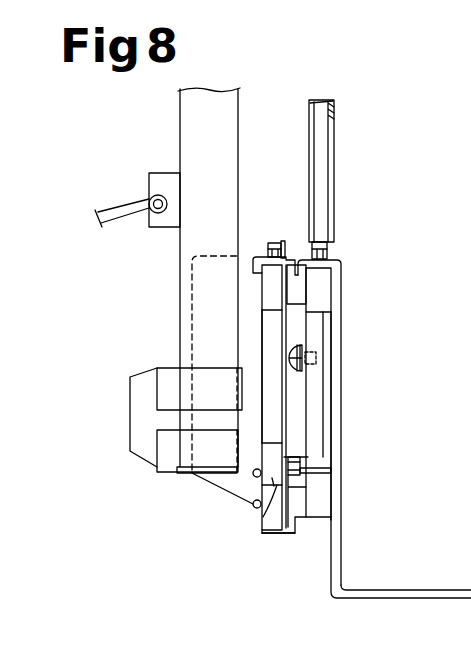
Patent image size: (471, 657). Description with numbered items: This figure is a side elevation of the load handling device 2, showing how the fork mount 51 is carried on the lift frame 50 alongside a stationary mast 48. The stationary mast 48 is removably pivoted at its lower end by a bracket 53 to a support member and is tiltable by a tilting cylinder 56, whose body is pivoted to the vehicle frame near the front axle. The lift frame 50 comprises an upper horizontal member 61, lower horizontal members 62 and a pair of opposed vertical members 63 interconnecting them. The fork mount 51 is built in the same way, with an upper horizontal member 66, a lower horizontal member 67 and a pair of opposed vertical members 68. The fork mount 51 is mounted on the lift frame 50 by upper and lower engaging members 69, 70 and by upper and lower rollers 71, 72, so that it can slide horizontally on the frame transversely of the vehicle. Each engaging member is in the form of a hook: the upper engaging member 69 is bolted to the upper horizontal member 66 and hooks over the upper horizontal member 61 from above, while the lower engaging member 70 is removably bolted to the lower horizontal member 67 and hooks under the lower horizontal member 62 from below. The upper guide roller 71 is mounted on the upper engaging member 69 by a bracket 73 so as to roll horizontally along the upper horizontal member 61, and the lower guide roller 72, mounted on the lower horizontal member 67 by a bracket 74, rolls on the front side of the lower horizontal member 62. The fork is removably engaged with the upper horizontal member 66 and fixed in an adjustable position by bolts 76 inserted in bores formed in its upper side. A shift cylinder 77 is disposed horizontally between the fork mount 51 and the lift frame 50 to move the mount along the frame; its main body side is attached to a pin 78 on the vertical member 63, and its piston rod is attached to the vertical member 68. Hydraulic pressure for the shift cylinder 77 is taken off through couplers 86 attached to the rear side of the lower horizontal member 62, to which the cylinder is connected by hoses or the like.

The load handling device 2 is at (353, 293).
The stationary mast 48 is at (198, 126).
The lift frame 50 is at (258, 337).
The fork mount 51 is at (329, 388).
The bracket 53 is at (146, 423).
The tilting cylinder 56 is at (121, 208).
The upper horizontal member 61 is at (270, 287).
The lower horizontal member 62 is at (266, 524).
The vertical member 63 is at (238, 432).
The upper horizontal member 66 is at (318, 274).
The lower horizontal member 67 is at (320, 493).
The vertical member 68 is at (320, 412).
The upper engaging member 69 is at (294, 258).
The lower engaging member 70 is at (288, 535).
The upper guide roller 71 is at (266, 257).
The lower guide roller 72 is at (301, 463).
The bracket 73 is at (281, 243).
The bracket 74 is at (313, 472).
The bolt 76 is at (328, 235).
The shift cylinder 77 is at (307, 349).
The pin 78 is at (318, 358).
The coupler 86 is at (253, 504).